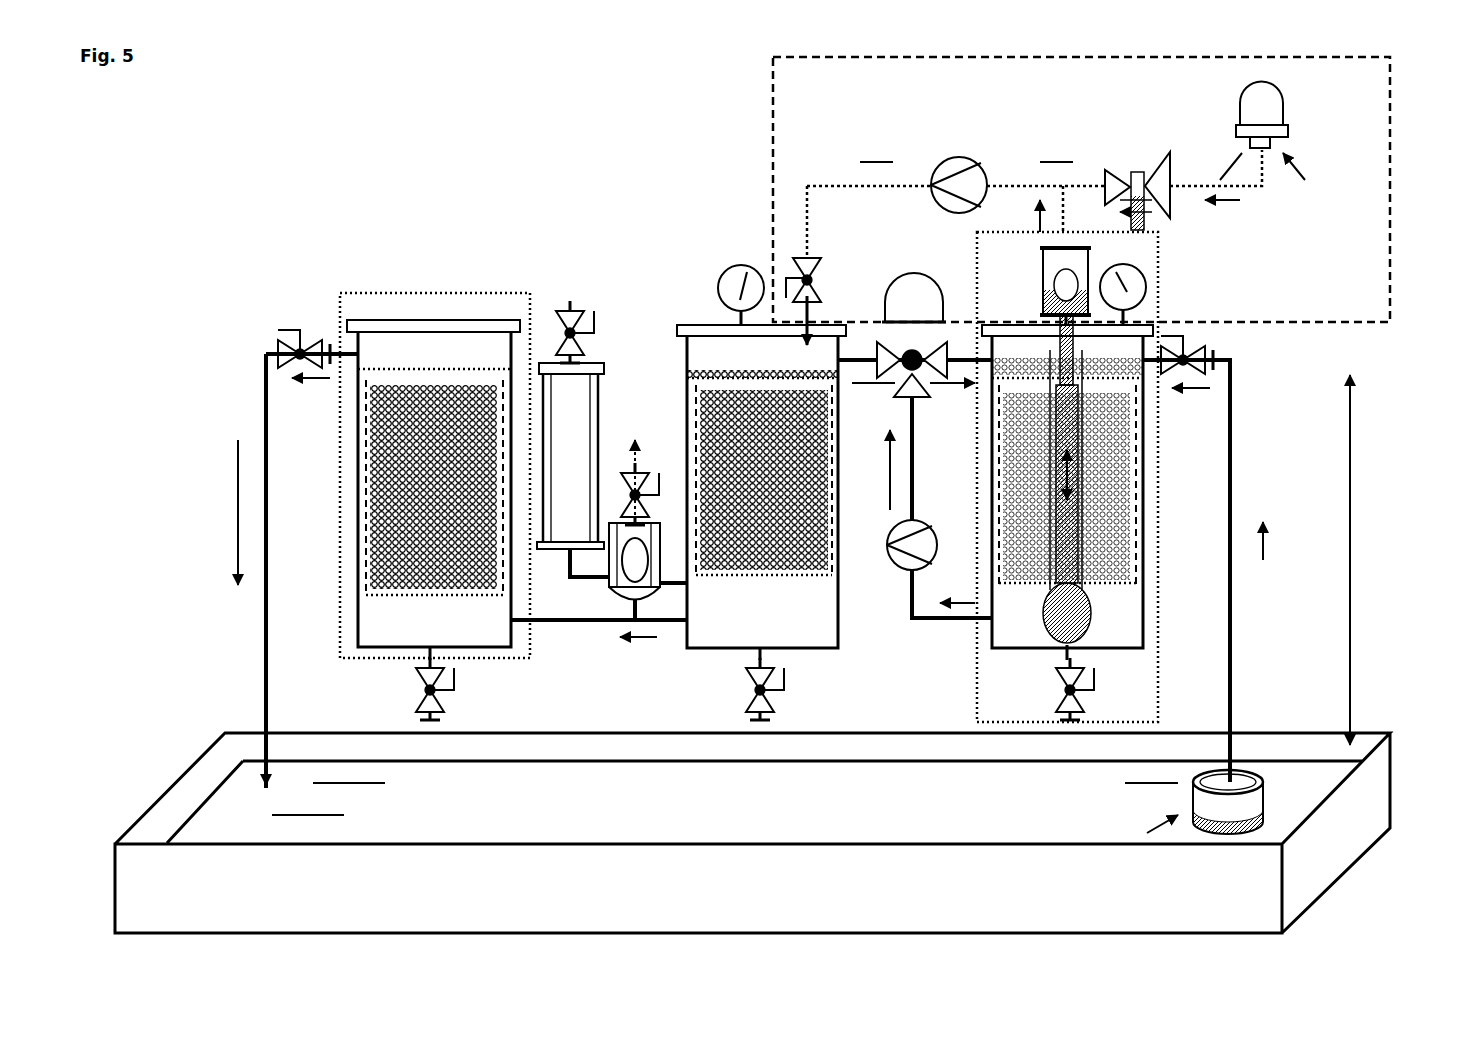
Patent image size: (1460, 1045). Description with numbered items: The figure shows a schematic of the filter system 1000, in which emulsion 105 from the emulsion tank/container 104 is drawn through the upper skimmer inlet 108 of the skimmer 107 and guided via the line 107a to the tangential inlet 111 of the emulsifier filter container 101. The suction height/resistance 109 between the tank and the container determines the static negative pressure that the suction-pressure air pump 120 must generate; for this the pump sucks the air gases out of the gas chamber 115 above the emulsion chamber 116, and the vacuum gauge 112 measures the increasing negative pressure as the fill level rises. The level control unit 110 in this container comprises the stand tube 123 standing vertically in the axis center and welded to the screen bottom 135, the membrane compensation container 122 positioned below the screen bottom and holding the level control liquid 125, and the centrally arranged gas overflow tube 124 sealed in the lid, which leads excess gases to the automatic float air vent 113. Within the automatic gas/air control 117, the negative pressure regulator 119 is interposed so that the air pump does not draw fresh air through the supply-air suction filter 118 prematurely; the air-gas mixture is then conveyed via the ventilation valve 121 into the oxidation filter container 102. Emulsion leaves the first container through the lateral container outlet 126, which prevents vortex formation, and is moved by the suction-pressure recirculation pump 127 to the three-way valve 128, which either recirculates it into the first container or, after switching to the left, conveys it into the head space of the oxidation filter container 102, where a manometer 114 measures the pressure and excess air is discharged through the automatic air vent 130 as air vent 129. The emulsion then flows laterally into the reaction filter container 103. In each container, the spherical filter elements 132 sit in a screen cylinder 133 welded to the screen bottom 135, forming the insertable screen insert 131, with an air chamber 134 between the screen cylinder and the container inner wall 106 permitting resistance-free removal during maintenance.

The filter system 1000 is at (484, 136).
The emulsifier filter container 101 is at (1148, 590).
The oxidation filter container 102 is at (703, 322).
The reaction filter container 103 is at (414, 318).
The emulsion tank/container 104 is at (165, 790).
The emulsion 105 is at (250, 785).
The container inner wall 106 is at (355, 418).
The skimmer 107 is at (1248, 780).
The line 107a is at (1236, 500).
The skimmer inlet, top 108 is at (1330, 758).
The suction height/resistance 109 is at (1352, 560).
The level control unit 110 is at (1158, 640).
The tangential inlet 111 is at (1167, 327).
The vacuum gauge 112 is at (1140, 272).
The automatic float air vent 113 is at (1068, 258).
The manometer 114 is at (740, 266).
The gas chamber 115 is at (1023, 352).
The emulsion chamber 116 is at (990, 322).
The automatic gas/air control 117 is at (770, 176).
The supply-air suction filter 118 is at (1287, 113).
The negative pressure regulator 119 is at (1155, 167).
The suction-pressure air pump 120 is at (950, 157).
The ventilation valve 121 is at (812, 279).
The membrane compensation container 122 is at (1045, 630).
The stand tube of mechanical level control 123 is at (1100, 530).
The gas overflow tube 124 is at (1052, 355).
The level control liquid 125 is at (1075, 622).
The lateral container outlet 126 is at (968, 625).
The suction-pressure recirculation pump 127 is at (905, 570).
The three-way valve 128 is at (918, 274).
The air vent 129 is at (636, 415).
The automatic air vent 130 is at (614, 602).
The structure of screen insert in container 131 is at (340, 660).
The filter elements 132 is at (388, 448).
The screen cylinder 133 is at (368, 503).
The air chamber between screen cylinder and container inner wall 134 is at (368, 560).
The screen bottom 135 is at (400, 595).